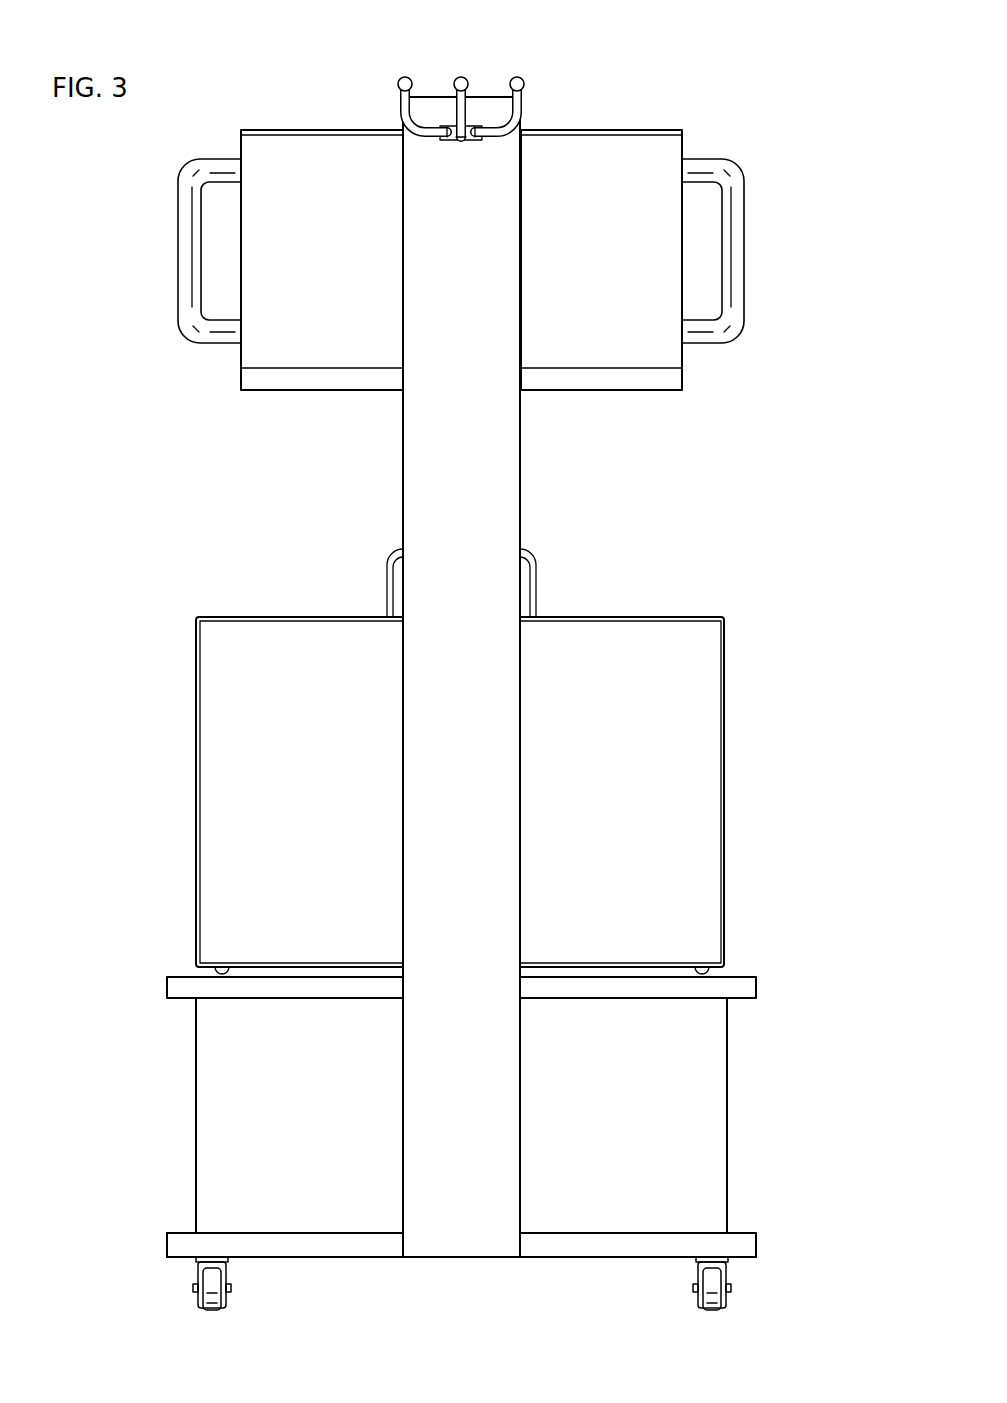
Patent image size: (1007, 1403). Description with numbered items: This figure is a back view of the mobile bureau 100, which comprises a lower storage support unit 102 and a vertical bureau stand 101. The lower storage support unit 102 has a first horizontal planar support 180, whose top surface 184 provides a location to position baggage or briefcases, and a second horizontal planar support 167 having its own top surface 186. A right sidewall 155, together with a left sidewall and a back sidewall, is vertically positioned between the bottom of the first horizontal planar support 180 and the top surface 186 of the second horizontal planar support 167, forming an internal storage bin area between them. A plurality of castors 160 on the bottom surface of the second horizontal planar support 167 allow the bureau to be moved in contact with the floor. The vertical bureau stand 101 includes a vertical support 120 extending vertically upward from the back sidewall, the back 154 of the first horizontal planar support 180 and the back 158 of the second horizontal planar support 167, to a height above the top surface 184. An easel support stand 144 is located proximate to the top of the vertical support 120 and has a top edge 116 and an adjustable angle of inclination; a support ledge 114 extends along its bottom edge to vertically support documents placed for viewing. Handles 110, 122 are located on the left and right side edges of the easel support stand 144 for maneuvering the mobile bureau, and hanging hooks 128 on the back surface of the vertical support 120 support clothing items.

The mobile bureau 100 is at (802, 96).
The vertical bureau stand 101 is at (774, 196).
The lower storage support unit 102 is at (760, 1139).
The handle 110 is at (178, 250).
The support ledge 114 is at (682, 362).
The top edge 116 is at (291, 130).
The vertical support 120 is at (522, 122).
The handle 122 is at (745, 250).
The hanging hook 128 is at (398, 84).
The easel support stand 144 is at (241, 150).
The back of first planar support 154 is at (632, 985).
The right sidewall 155 is at (196, 1117).
The back of second planar support 158 is at (635, 1245).
The castors 160 is at (194, 1288).
The second horizontal planar support 167 is at (167, 1243).
The first horizontal planar support 180 is at (167, 988).
The top surface 184 is at (748, 977).
The top surface 186 is at (748, 1233).